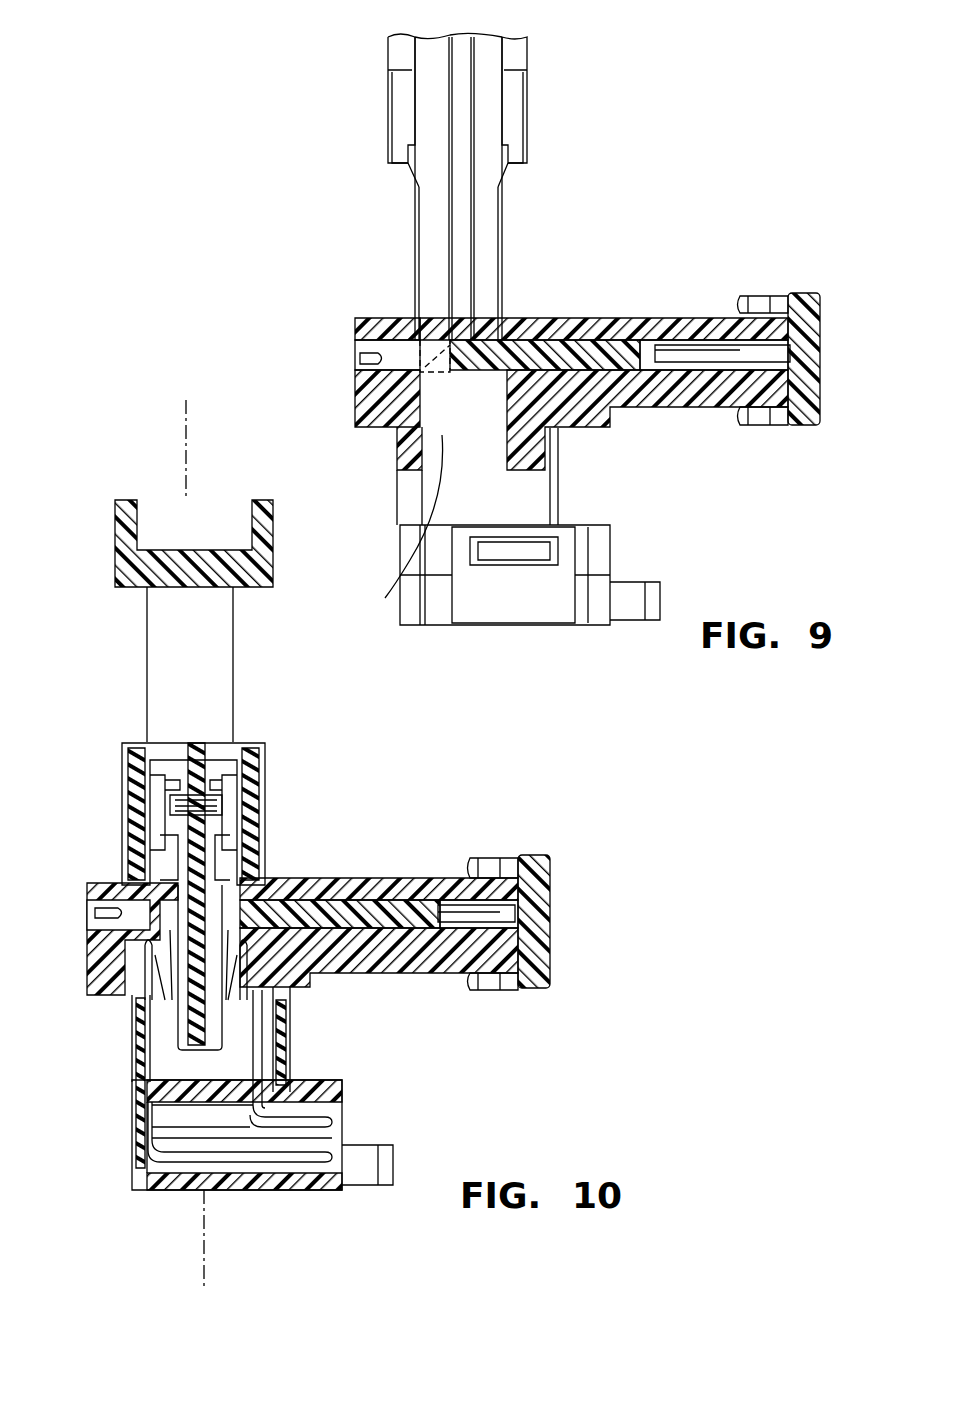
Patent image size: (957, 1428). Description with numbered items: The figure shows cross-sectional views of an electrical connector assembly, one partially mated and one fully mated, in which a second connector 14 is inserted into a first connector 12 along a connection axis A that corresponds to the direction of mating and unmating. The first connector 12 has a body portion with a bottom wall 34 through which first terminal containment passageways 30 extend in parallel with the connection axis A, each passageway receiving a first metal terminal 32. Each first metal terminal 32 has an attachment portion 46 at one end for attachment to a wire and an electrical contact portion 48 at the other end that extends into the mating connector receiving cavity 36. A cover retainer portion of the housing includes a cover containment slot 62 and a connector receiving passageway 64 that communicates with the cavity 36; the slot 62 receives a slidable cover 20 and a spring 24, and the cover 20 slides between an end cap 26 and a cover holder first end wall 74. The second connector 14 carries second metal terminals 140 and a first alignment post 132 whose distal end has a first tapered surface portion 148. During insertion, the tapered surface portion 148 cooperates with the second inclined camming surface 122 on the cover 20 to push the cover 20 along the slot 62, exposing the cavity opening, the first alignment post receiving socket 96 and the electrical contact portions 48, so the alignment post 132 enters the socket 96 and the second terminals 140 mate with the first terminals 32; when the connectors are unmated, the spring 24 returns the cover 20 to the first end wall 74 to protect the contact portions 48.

In FIG. 9, the first connector 12 is at (826, 408).
In FIG. 10, the first connector 12 is at (567, 962).
In FIG. 9, the second connector 14 is at (388, 100).
In FIG. 10, the second connector 14 is at (147, 652).
In FIG. 9, the slidable cover 20 is at (540, 345).
In FIG. 10, the slidable cover 20 is at (322, 902).
In FIG. 10, the spring 24 is at (442, 906).
In FIG. 9, the end cap 26 is at (795, 300).
In FIG. 10, the end cap 26 is at (548, 870).
In FIG. 10, the first terminal containment passageways 30 is at (258, 1065).
In FIG. 10, the first metal terminal 32 is at (255, 1003).
In FIG. 10, the bottom wall 34 is at (148, 1112).
In FIG. 10, the mating connector receiving chamber or cavity 36 is at (160, 1055).
In FIG. 10, the attachment portion 46 is at (315, 1155).
In FIG. 10, the electrical contact portion 48 is at (160, 996).
In FIG. 10, the cover containment slot 62 is at (480, 870).
In FIG. 10, the connector receiving passageway 64 is at (262, 872).
In FIG. 10, the cover holder first end wall or first stop 74 is at (100, 910).
In FIG. 9, the first alignment post receiving socket 96 is at (458, 525).
In FIG. 9, the second inclined camming surface or chamfer 122 is at (480, 348).
In FIG. 9, the first alignment post 132 is at (415, 212).
In FIG. 10, the second metal terminal 140 is at (225, 1012).
In FIG. 9, the first tapered surface portion 148 is at (470, 350).
In FIG. 10, the connection axis A is at (204, 1247).